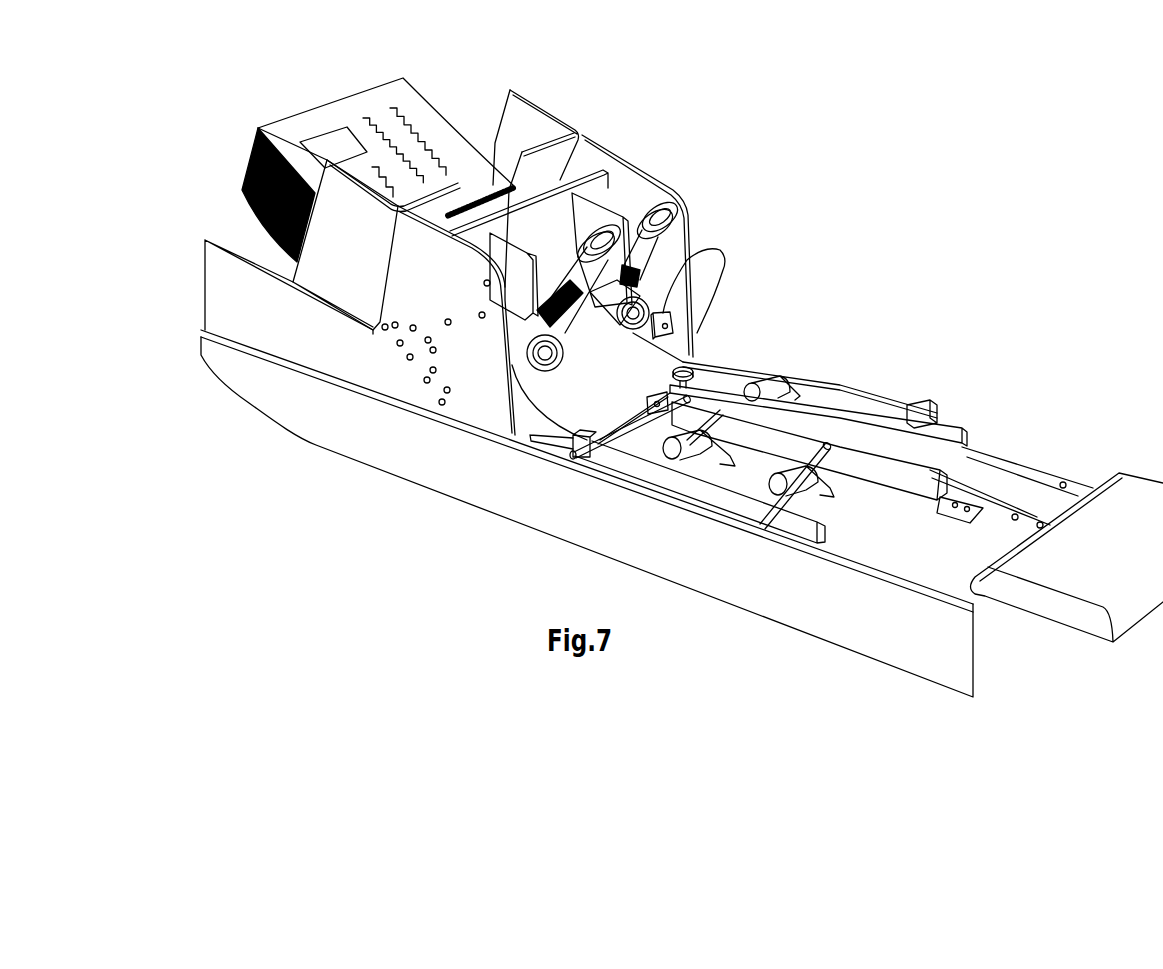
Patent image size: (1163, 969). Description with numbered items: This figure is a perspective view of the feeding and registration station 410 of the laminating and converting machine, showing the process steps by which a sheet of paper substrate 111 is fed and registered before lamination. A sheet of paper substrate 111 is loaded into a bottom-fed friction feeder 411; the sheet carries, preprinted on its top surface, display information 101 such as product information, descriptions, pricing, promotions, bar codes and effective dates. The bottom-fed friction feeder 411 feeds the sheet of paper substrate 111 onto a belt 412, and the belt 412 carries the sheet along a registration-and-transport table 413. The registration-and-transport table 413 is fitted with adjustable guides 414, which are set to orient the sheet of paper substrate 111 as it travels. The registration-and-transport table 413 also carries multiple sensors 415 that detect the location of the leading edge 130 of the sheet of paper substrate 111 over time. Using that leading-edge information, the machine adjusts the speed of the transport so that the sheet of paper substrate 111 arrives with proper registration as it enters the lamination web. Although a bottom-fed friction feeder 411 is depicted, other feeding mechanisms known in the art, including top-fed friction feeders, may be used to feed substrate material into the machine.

The display information 101 is at (418, 130).
The sheet of paper substrate 111 is at (307, 122).
The leading edge 130 is at (638, 440).
The feeding and registration station 410 is at (973, 225).
The bottom-fed friction feeder 411 is at (207, 272).
The belt 412 is at (1010, 485).
The registration-and-transport table 413 is at (986, 452).
The adjustable guides 414 is at (786, 406).
The sensors 415 is at (688, 318).